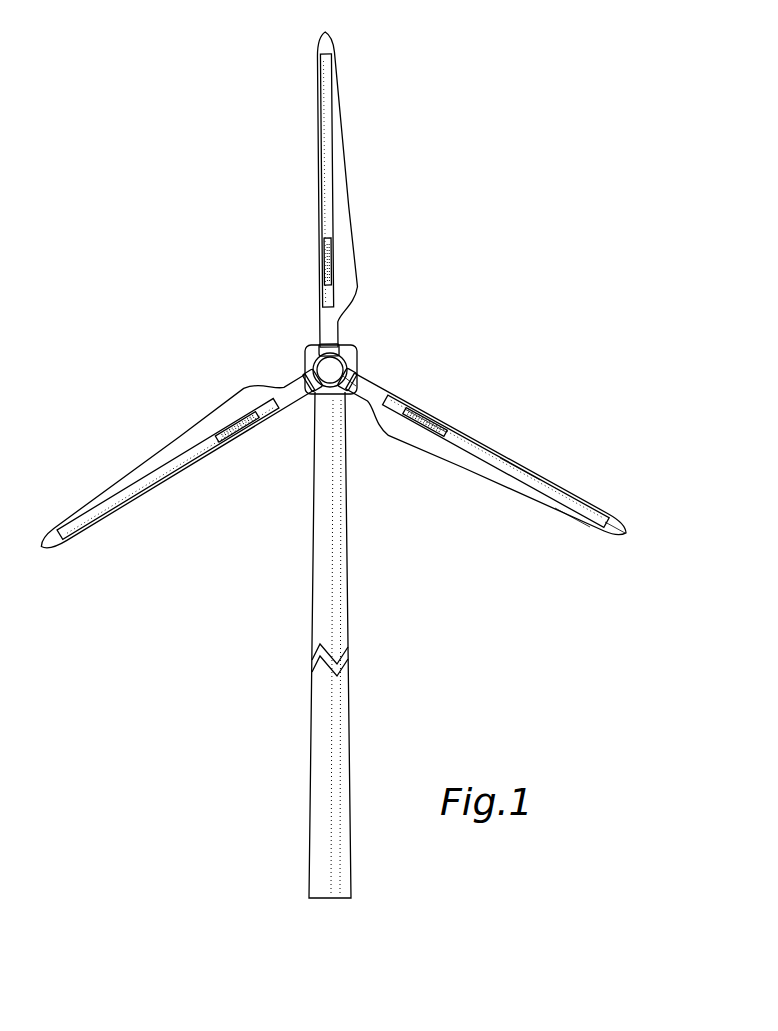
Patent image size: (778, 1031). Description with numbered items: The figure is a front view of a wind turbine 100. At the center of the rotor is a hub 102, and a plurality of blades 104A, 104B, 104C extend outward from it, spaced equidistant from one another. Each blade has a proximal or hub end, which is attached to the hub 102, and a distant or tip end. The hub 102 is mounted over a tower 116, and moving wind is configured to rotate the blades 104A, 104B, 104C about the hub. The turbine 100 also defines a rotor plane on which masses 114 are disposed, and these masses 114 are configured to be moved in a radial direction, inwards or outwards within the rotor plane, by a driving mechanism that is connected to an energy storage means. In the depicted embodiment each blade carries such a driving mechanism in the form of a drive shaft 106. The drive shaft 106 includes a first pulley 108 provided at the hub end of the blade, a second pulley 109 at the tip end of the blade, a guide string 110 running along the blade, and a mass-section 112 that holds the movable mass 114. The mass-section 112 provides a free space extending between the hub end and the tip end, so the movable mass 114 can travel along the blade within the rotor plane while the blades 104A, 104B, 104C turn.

The turbine 100 is at (543, 352).
The hub 102 is at (338, 365).
The blade 104A is at (418, 443).
The blade 104B is at (224, 417).
The blade 104C is at (347, 266).
The drive shaft 106 is at (362, 395).
The first pulley 108 is at (358, 386).
The second pulley 109 is at (618, 524).
The guide string 110 is at (523, 470).
The mass-section 112 is at (574, 522).
The movable mass 114 is at (432, 422).
The tower 116 is at (327, 625).